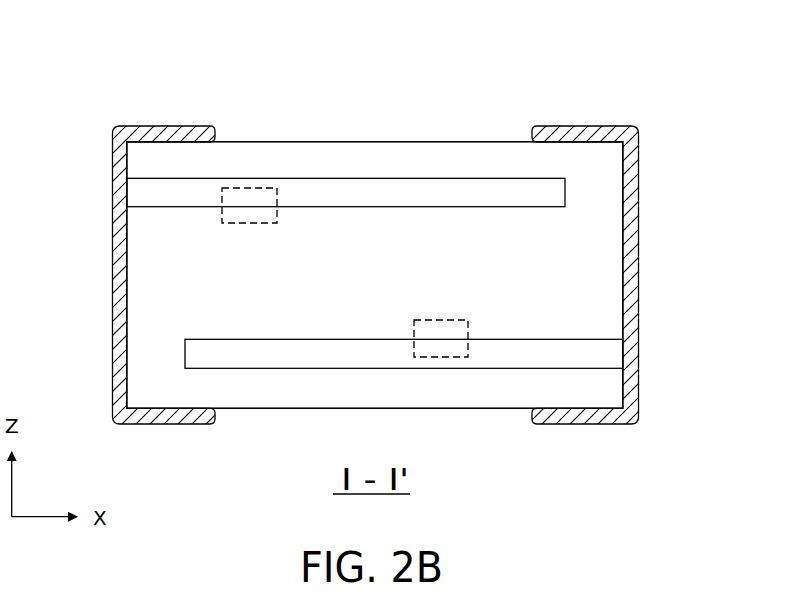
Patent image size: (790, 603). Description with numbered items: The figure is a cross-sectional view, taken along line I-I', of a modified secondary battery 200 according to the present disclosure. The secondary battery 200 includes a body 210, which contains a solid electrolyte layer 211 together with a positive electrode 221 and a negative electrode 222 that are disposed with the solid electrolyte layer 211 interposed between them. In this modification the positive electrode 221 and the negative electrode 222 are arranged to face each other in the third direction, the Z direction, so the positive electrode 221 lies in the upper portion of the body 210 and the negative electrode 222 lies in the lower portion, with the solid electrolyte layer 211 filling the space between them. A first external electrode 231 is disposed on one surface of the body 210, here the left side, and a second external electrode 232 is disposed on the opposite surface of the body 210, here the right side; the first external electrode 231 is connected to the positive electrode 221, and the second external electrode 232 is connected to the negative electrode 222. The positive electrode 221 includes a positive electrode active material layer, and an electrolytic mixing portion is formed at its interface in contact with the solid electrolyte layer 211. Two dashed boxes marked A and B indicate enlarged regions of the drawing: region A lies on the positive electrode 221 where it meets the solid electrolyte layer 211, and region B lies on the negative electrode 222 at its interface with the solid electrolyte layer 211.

The secondary battery 200 is at (390, 30).
The body 210 is at (372, 141).
The solid electrolyte layer 211 is at (575, 257).
The positive electrode 221 is at (553, 190).
The negative electrode 222 is at (608, 353).
The first external electrode 231 is at (176, 127).
The second external electrode 232 is at (593, 127).
The region A is at (245, 223).
The region B is at (440, 320).